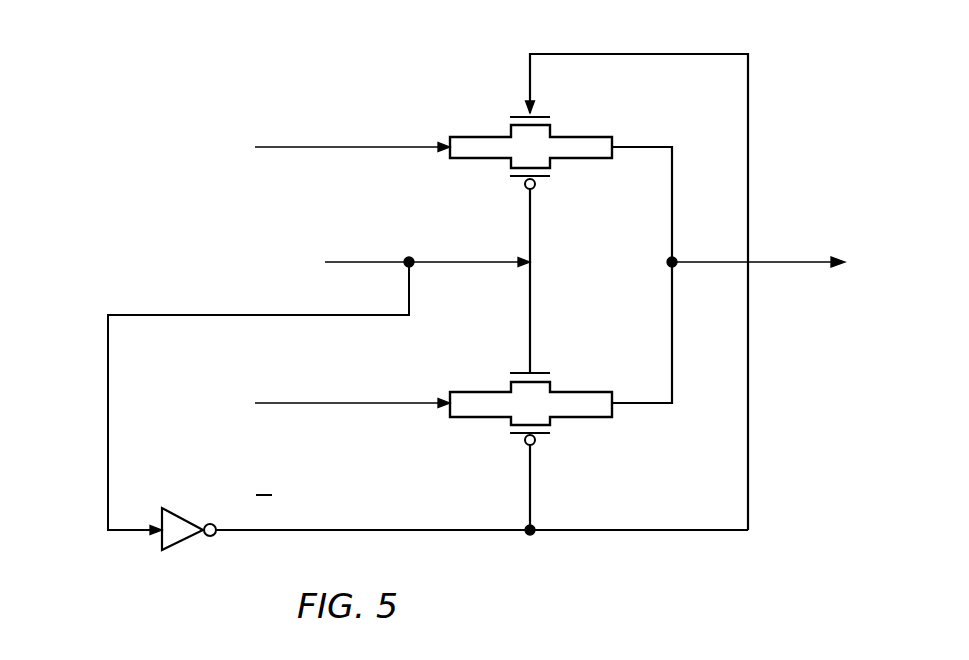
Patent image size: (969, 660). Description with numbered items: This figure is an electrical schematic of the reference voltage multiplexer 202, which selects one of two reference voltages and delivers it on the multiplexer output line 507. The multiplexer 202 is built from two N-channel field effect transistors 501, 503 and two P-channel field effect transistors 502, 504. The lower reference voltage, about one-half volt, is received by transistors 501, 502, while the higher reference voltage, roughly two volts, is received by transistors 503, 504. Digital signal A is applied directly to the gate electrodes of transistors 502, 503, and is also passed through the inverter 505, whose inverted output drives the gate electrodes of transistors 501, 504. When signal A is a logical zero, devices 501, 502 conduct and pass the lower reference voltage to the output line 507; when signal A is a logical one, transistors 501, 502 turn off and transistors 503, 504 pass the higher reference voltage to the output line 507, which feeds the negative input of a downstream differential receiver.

The reference voltage multiplexer 202 is at (458, 105).
The N-channel field effect transistor 501 is at (542, 113).
The P-channel field effect transistor 502 is at (540, 182).
The N-channel field effect transistor 503 is at (542, 370).
The P-channel field effect transistor 504 is at (540, 440).
The inverter 505 is at (168, 546).
The multiplexer output line 507 is at (803, 258).